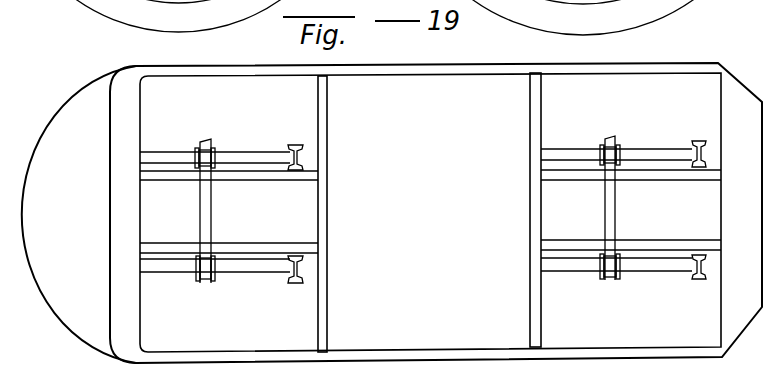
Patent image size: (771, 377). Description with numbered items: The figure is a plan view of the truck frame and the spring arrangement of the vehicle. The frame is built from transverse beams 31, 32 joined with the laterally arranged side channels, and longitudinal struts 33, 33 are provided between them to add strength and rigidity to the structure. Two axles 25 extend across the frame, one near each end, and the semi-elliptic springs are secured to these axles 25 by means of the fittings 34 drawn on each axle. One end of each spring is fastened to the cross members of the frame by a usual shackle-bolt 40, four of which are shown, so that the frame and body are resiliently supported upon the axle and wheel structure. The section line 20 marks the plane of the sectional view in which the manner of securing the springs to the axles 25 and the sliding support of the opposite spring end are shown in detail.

The section line 20 is at (94, 155).
The axle 25 is at (212, 203).
The transverse beam 31 is at (327, 284).
The transverse beam 32 is at (531, 283).
The longitudinal strut 33 is at (264, 176).
The bushing 34 is at (280, 160).
The shackle-bolt 40 is at (317, 128).